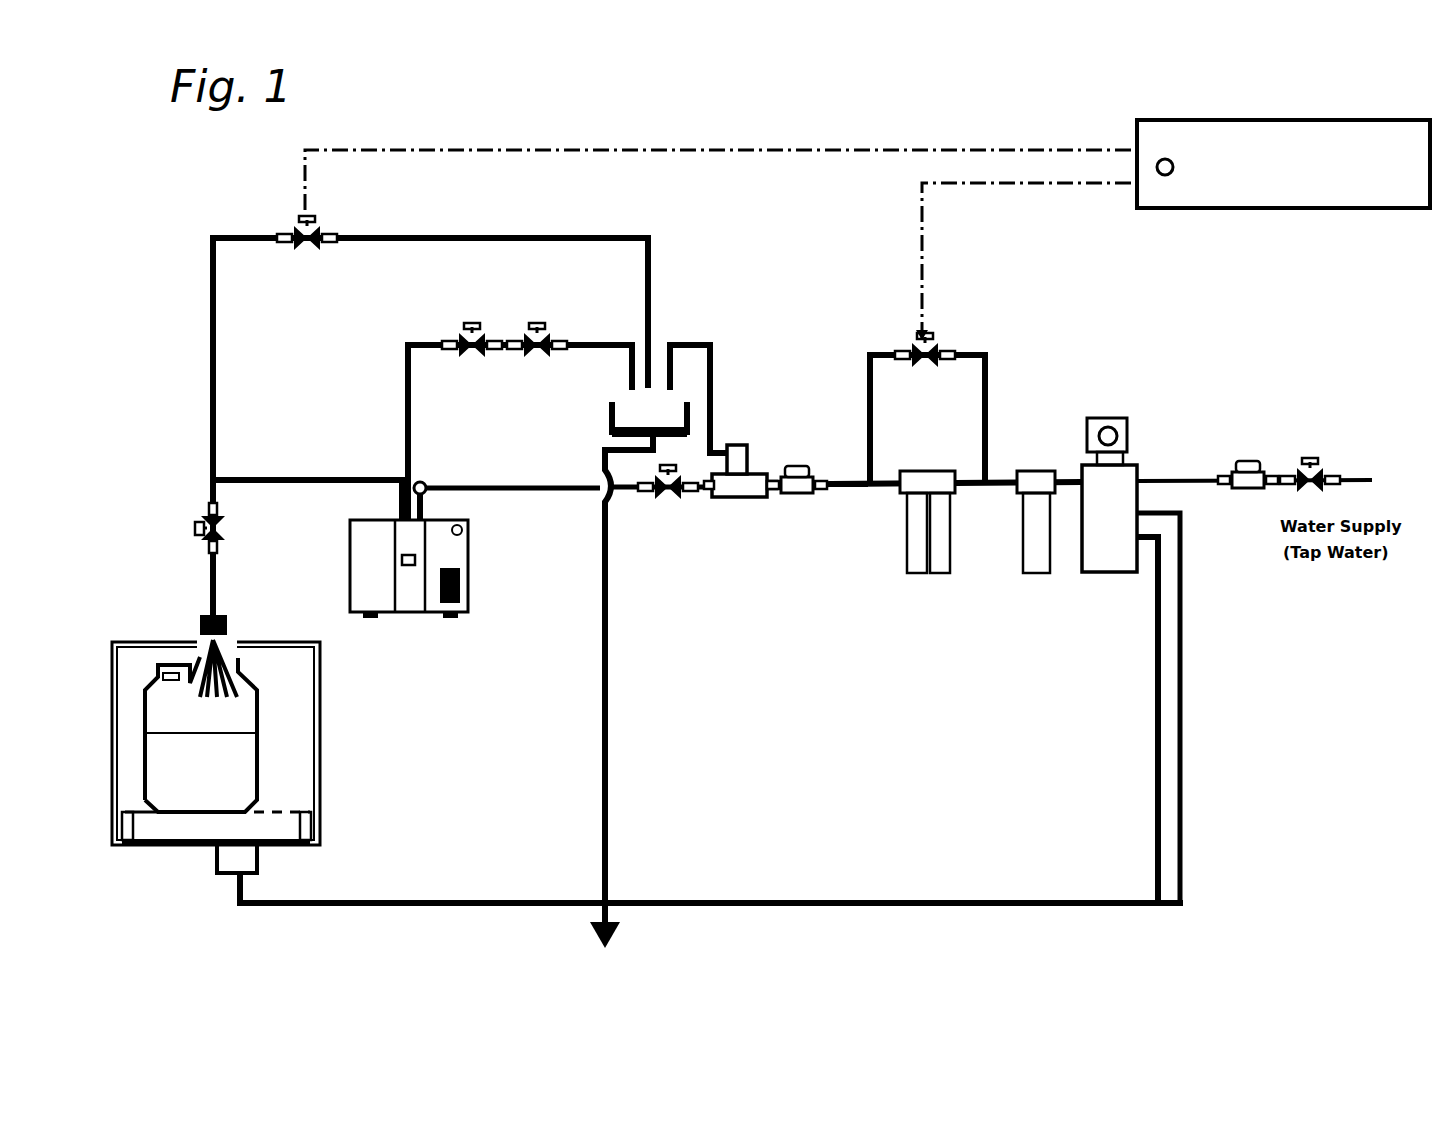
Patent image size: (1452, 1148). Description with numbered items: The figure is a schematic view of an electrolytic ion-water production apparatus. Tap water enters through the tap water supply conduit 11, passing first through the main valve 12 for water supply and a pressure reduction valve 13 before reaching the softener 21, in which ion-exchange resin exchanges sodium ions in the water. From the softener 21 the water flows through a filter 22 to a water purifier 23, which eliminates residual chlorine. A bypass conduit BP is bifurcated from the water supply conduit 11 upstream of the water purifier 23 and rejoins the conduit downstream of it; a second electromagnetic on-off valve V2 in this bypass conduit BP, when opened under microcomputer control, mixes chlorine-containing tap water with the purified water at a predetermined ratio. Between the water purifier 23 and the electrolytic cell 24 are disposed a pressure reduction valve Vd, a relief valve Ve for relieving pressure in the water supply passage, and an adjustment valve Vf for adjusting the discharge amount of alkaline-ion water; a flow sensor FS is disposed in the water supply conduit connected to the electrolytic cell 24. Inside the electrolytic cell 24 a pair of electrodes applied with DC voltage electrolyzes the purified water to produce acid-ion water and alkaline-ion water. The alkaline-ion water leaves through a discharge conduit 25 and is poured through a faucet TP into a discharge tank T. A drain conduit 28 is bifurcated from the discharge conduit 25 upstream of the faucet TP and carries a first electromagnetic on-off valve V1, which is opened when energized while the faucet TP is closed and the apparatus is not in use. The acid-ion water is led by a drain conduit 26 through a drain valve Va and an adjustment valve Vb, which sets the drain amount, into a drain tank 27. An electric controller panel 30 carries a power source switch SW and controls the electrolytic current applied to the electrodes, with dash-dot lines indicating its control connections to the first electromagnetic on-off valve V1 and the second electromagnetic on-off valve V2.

The tap water supply conduit 11 is at (843, 490).
The main valve 12 is at (1313, 462).
The pressure reduction valve 13 is at (1255, 460).
The softener 21 is at (1117, 418).
The filter 22 is at (1030, 470).
The water purifier 23 is at (912, 470).
The electrolytic cell 24 is at (428, 618).
The discharge conduit 25 is at (275, 478).
The drain conduit 26 is at (416, 342).
The drain tank 27 is at (612, 410).
The drain conduit 28 is at (433, 237).
The electric controller panel 30 is at (1283, 164).
The first electromagnetic on-off valve V1 is at (313, 220).
The second electromagnetic on-off valve V2 is at (940, 346).
The drain valve Va is at (473, 322).
The adjustment valve Vb is at (539, 324).
The pressure reduction valve Vd is at (805, 462).
The relief valve Ve is at (740, 498).
The adjustment valve Vf is at (663, 500).
The flow sensor FS is at (425, 482).
The faucet TP is at (228, 531).
The discharge tank T is at (262, 732).
The bypass conduit BP is at (988, 390).
The power source switch SW is at (1174, 165).